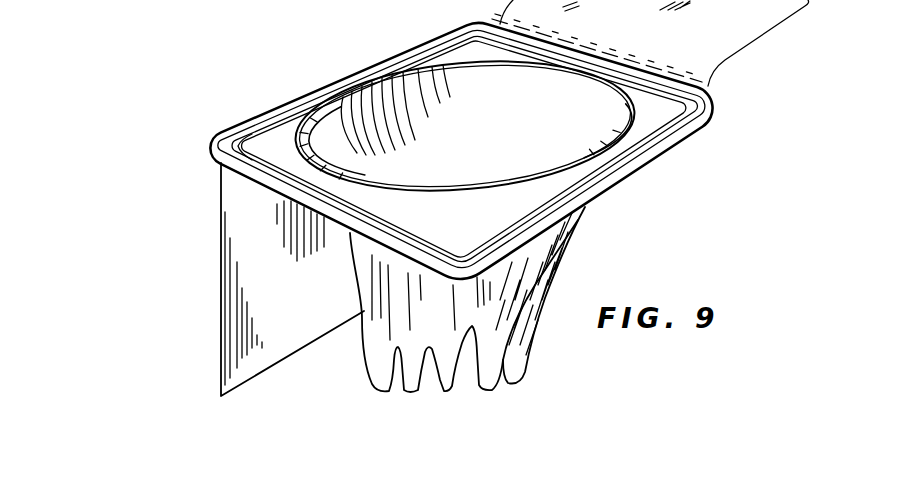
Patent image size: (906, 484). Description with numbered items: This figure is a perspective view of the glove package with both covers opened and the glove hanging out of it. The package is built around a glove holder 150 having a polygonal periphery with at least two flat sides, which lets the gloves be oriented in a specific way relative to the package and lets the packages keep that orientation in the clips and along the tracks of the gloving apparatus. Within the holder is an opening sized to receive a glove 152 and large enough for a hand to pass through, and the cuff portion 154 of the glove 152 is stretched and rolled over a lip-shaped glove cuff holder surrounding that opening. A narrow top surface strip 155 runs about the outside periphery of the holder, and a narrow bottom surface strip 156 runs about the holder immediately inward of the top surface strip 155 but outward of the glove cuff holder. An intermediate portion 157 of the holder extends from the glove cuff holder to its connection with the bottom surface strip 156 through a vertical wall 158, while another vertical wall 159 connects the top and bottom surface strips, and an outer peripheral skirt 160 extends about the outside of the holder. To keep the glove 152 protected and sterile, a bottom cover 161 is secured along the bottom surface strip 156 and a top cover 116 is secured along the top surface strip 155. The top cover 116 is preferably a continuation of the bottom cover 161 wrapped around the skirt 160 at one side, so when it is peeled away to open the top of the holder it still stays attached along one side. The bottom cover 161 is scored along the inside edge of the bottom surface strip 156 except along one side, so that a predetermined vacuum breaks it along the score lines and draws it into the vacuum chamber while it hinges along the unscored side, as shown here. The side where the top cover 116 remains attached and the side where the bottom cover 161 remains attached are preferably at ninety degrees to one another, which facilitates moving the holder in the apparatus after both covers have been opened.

The top cover 116 is at (758, 33).
The glove holder 150 is at (462, 145).
The glove 152 is at (550, 267).
The cuff portion 154 is at (597, 150).
The top surface strip 155 is at (320, 88).
The bottom surface strip 156 is at (240, 137).
The intermediate portion 157 is at (481, 51).
The vertical wall 158 is at (223, 163).
The vertical wall 159 is at (390, 63).
The outer peripheral skirt 160 is at (701, 123).
The bottom cover 161 is at (222, 265).